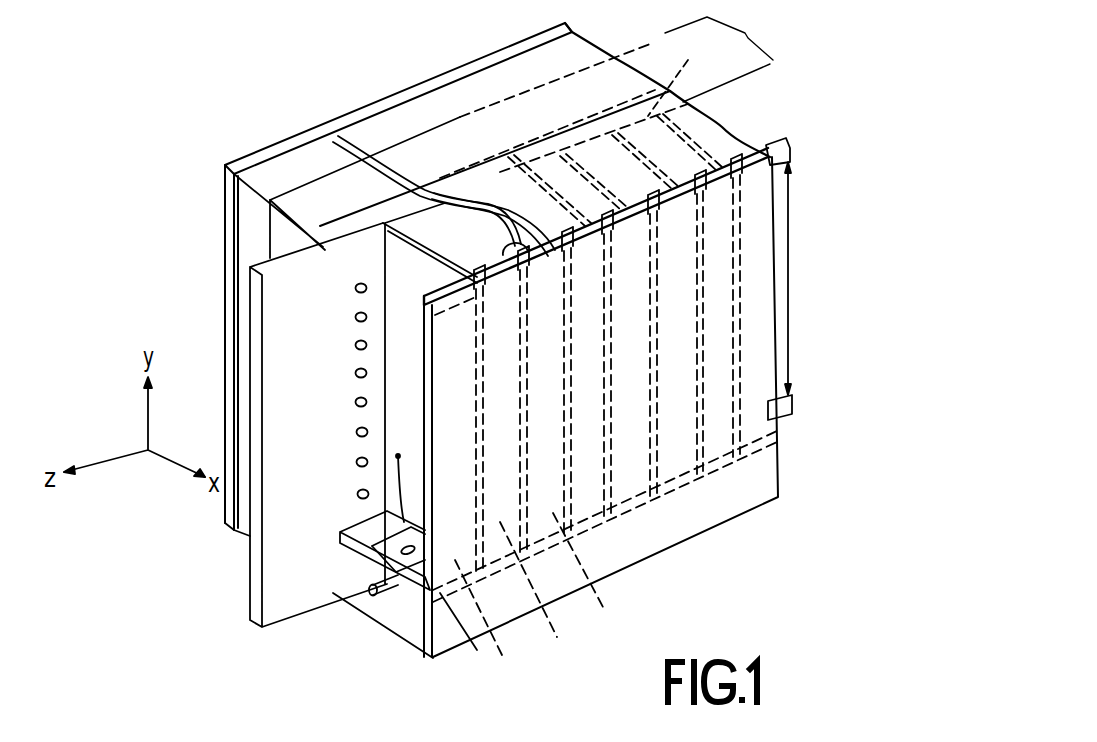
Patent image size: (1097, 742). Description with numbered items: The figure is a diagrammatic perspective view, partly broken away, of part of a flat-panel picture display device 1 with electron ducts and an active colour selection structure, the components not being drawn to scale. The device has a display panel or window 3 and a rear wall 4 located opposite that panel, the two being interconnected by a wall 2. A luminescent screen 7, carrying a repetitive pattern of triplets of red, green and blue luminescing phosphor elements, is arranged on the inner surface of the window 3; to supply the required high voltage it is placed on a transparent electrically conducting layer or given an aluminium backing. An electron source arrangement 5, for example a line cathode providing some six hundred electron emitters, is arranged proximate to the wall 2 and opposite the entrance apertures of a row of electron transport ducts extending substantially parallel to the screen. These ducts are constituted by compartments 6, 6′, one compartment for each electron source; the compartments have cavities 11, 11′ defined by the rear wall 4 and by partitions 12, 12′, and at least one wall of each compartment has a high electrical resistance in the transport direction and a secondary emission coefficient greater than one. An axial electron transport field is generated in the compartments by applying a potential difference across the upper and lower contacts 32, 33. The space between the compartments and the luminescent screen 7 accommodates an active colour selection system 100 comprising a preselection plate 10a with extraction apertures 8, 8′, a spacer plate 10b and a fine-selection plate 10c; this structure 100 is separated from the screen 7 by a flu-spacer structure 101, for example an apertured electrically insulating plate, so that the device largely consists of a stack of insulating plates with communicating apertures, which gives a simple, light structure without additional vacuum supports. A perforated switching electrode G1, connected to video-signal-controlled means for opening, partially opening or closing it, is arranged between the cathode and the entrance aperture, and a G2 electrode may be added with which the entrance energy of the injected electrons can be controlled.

The flat-panel picture display device 1 is at (613, 400).
The wall 2 is at (247, 535).
The display panel (window) 3 is at (253, 163).
The rear wall 4 is at (722, 433).
The electron source arrangement 5 is at (386, 592).
The compartment 6 is at (485, 619).
The compartment 6′ is at (538, 589).
The luminescent screen 7 is at (236, 223).
The extraction aperture 8 is at (368, 288).
The extraction aperture 8′ is at (368, 318).
The preselection plate 10a is at (688, 60).
The spacer plate 10b is at (657, 83).
The fine-selection plate 10c is at (616, 56).
The cavity 11 is at (338, 537).
The cavity 11′ is at (427, 227).
The partition 12 is at (442, 248).
The partition 12′ is at (527, 266).
The upper contact 32 is at (790, 154).
The lower contact 33 is at (792, 412).
The active colour selection system 100 is at (731, 51).
The flu-spacer structure 101 is at (250, 228).
The switching electrode G1 is at (408, 593).
The G2 electrode G2 is at (463, 638).
The spacing dimension Va is at (796, 298).